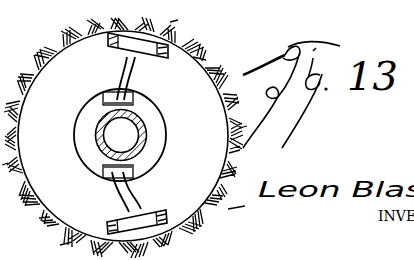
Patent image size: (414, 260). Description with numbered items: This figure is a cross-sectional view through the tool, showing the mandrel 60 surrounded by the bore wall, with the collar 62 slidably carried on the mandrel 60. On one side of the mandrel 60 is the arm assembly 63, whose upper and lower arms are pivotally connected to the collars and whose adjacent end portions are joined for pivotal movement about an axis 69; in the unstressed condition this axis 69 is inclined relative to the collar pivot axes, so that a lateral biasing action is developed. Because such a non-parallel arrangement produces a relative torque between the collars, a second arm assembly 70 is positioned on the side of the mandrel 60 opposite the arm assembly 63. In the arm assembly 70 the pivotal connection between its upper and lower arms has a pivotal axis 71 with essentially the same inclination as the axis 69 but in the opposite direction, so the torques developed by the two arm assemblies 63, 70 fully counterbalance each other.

The mandrel 60 is at (143, 139).
The collar 62 is at (162, 120).
The arm assembly 63 is at (123, 200).
The axis 69 is at (208, 208).
The arm assembly 70 is at (118, 76).
The pivotal axis 71 is at (199, 56).